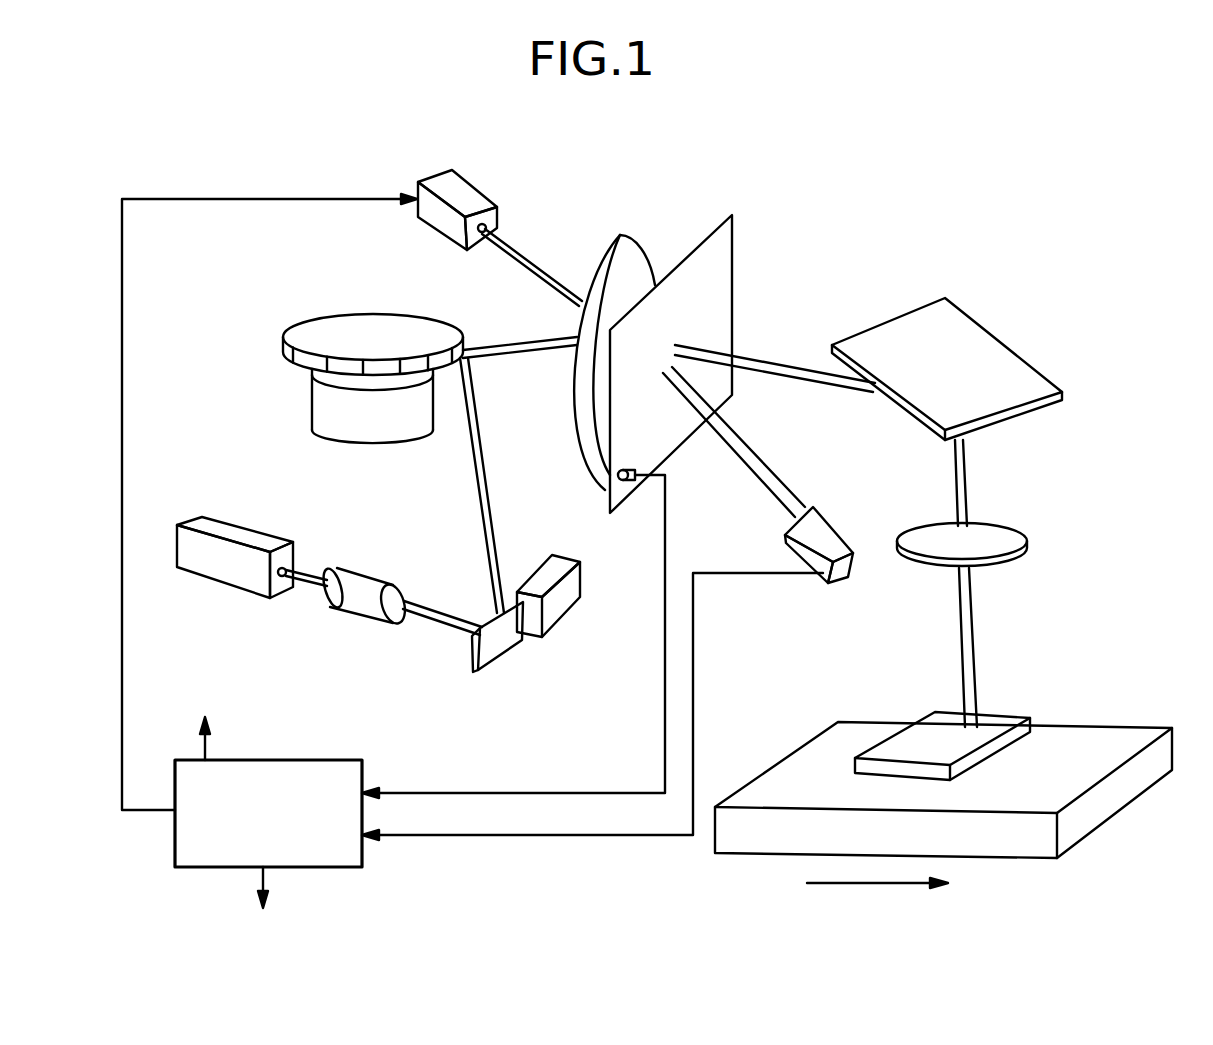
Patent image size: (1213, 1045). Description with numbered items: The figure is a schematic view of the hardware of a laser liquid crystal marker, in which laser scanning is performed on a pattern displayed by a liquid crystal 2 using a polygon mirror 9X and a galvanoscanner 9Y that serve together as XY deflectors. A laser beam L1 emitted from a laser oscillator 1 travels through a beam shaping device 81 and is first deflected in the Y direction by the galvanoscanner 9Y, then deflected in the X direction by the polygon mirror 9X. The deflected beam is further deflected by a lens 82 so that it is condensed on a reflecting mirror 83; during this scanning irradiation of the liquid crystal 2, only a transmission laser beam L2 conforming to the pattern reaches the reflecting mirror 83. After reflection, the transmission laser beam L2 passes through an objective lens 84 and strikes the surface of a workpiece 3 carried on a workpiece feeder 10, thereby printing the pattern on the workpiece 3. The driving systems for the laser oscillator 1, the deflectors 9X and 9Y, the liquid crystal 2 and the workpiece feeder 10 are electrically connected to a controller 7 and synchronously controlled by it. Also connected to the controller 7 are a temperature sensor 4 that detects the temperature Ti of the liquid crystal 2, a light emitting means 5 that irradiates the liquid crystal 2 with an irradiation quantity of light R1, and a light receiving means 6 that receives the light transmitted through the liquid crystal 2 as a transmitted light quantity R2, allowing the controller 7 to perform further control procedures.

The laser oscillator 1 is at (230, 523).
The liquid crystal 2 is at (734, 240).
The workpiece 3 is at (1015, 712).
The temperature sensor 4 is at (624, 483).
The light emitting means 5 is at (475, 182).
The light receiving means 6 is at (835, 528).
The controller 7 is at (353, 760).
The polygon mirror 9X is at (413, 446).
The galvanoscanner 9Y is at (573, 610).
The workpiece feeder 10 is at (1113, 727).
The beam shaping device 81 is at (377, 578).
The lens 82 is at (627, 236).
The reflecting mirror 83 is at (1003, 342).
The objective lens 84 is at (1027, 535).
The irradiation quantity of light R1 is at (535, 262).
The transmitted light quantity R2 is at (765, 468).
The laser beam L1 is at (506, 342).
The transmission laser beam L2 is at (781, 360).
The temperature of the liquid crystal Ti is at (665, 512).